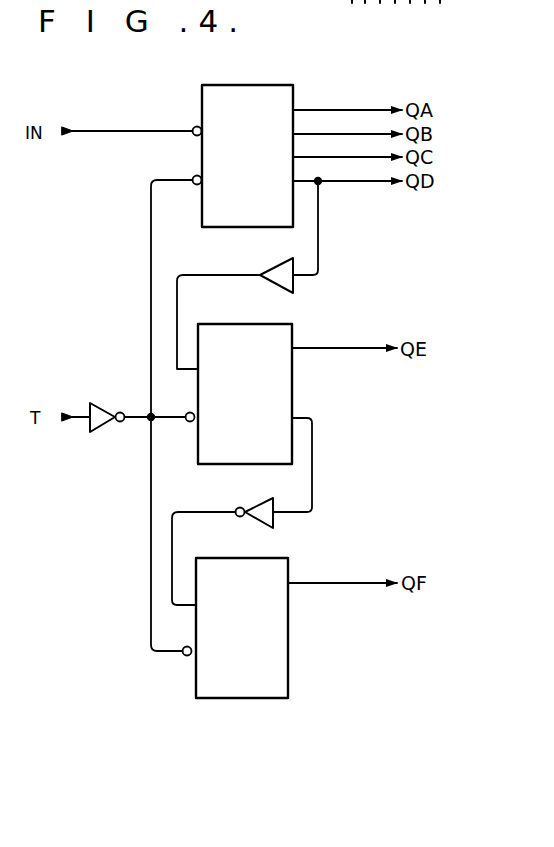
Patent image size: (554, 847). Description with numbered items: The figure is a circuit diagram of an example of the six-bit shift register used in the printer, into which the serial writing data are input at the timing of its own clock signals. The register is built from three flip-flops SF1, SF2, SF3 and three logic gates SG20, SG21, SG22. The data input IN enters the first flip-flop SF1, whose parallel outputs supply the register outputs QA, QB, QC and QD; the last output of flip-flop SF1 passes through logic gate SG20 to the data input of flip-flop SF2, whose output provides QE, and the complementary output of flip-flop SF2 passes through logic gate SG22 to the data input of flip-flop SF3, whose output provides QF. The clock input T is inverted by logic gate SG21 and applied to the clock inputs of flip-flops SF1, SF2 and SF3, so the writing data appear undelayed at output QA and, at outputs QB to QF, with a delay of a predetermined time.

The flip-flop SF1 is at (243, 144).
The flip-flop SF2 is at (239, 383).
The flip-flop SF3 is at (236, 618).
The logic gate SG20 is at (261, 272).
The logic gate SG21 is at (98, 405).
The logic gate SG22 is at (247, 507).